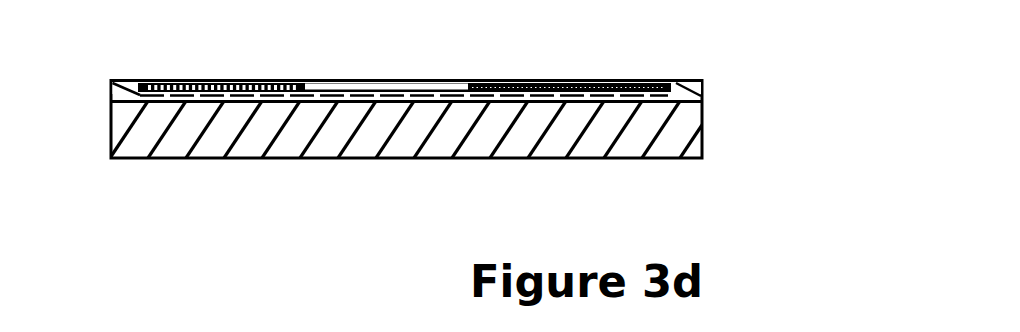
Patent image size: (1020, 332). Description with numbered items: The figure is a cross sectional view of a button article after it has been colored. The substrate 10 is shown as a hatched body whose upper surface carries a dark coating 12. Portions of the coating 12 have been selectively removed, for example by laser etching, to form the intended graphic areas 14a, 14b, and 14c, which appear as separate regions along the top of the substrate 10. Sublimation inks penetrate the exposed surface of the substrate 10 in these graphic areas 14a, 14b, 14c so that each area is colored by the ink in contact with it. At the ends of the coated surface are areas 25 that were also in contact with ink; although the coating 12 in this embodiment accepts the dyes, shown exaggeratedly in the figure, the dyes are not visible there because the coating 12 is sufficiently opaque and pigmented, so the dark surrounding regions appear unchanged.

The substrate 10 is at (712, 130).
The coating 12 is at (703, 88).
The graphic area 14a is at (237, 83).
The graphic area 14b is at (365, 88).
The graphic area 14c is at (573, 82).
The areas in contact with the ink 25 is at (127, 86).